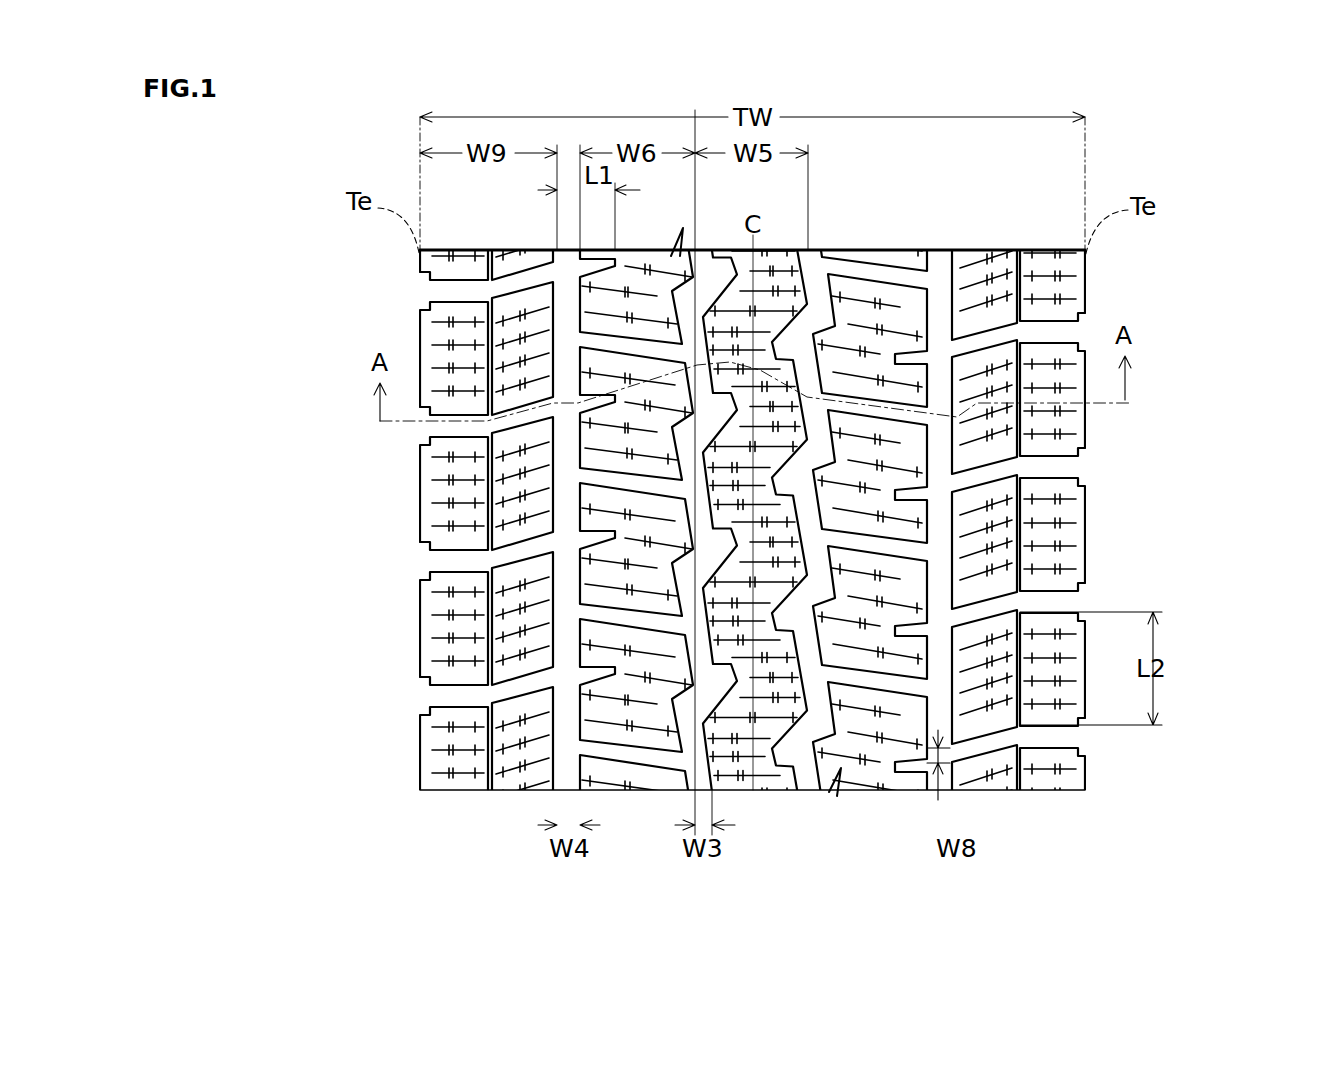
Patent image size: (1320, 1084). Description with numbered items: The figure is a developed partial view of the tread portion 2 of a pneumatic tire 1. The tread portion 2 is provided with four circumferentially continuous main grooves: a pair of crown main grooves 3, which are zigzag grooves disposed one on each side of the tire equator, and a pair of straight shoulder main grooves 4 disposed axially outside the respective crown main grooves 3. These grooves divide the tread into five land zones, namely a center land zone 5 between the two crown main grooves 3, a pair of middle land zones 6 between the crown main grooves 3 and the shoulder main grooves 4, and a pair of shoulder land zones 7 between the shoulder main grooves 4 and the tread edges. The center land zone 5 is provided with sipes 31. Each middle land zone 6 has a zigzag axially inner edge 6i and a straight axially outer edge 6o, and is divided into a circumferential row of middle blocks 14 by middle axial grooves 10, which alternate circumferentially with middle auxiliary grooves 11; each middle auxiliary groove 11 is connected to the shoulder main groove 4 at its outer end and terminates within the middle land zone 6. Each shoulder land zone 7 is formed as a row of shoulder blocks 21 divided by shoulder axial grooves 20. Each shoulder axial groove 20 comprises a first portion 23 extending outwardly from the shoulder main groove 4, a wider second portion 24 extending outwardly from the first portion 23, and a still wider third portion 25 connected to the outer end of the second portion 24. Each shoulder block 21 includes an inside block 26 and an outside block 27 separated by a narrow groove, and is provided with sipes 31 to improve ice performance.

The pneumatic tire 1 is at (1104, 192).
The tread portion 2 is at (1101, 227).
The crown main groove 3 is at (717, 262).
The shoulder main groove 4 is at (571, 260).
The center land zone 5 is at (746, 252).
The middle land zone 6 is at (640, 268).
The axially inner edge 6i is at (820, 440).
The axially outer edge 6o is at (920, 447).
The shoulder land zone 7 is at (477, 258).
The middle axial groove 10 is at (628, 484).
The middle auxiliary groove 11 is at (600, 667).
The middle block 14 is at (893, 455).
The shoulder axial groove 20 is at (442, 294).
The shoulder block 21 is at (472, 349).
The first portion 23 is at (517, 552).
The second portion 24 is at (450, 560).
The third portion 25 is at (425, 568).
The inside block 26 is at (998, 545).
The outside block 27 is at (1065, 558).
The sipe 31 is at (468, 760).